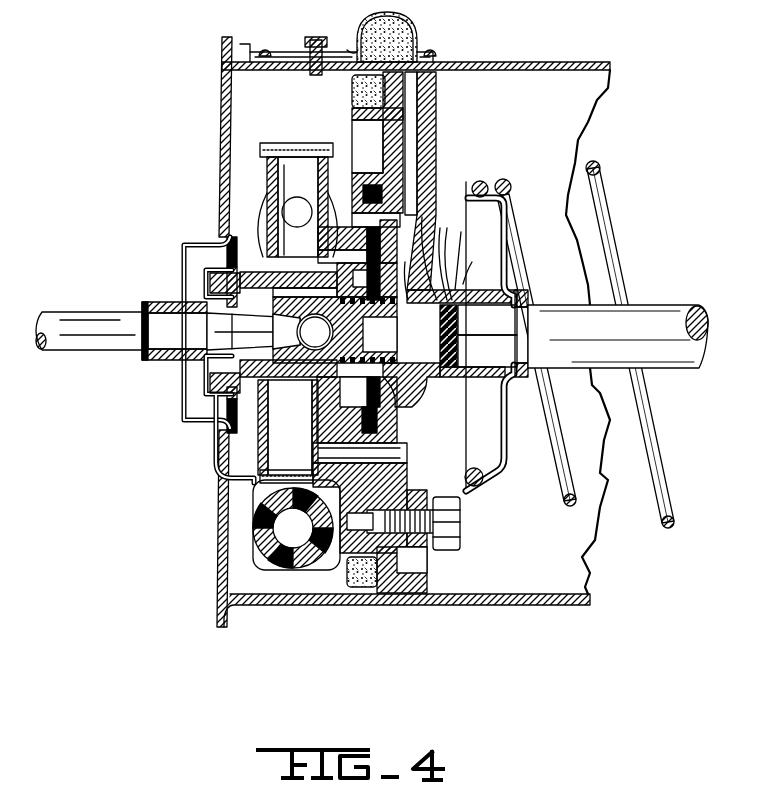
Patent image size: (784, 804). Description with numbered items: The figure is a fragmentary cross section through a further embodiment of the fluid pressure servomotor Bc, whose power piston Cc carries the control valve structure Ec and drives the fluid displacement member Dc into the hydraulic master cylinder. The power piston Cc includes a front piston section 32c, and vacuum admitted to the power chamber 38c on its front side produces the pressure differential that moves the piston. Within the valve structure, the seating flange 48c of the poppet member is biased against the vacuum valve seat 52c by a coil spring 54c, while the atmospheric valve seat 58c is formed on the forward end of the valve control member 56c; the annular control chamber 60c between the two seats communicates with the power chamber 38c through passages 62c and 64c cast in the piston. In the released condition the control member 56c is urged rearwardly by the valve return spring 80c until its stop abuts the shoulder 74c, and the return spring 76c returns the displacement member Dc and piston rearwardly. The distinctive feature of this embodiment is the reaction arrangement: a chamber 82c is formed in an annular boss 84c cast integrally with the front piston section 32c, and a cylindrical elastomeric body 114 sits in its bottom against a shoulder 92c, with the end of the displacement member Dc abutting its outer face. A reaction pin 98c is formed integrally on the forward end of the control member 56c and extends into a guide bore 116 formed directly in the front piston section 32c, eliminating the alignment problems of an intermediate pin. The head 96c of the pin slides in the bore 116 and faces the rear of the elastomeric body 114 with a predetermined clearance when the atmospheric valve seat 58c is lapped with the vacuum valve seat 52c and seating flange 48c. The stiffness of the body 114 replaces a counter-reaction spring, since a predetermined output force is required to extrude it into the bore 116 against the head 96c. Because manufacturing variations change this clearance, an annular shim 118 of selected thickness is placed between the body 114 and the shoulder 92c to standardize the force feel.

The fluid pressure servomotor Bc is at (567, 63).
The power piston Cc is at (439, 96).
The fluid displacement member Dc is at (656, 300).
The control valve structure Ec is at (182, 261).
The front piston section 32c is at (438, 104).
The power chamber 38c is at (501, 141).
The seating flange 48c is at (313, 445).
The vacuum valve seat 52c is at (298, 200).
The coil spring 54c is at (357, 237).
The valve control member 56c is at (312, 381).
The atmospheric valve seat 58c is at (283, 288).
The control chamber 60c is at (243, 428).
The passage 62c is at (287, 452).
The passage 64c is at (292, 483).
The shoulder 74c is at (203, 358).
The return spring 76c is at (601, 166).
The valve return spring 80c is at (410, 400).
The chamber 82c is at (514, 290).
The annular boss 84c is at (461, 232).
The shoulder 92c is at (458, 343).
The head 96c is at (444, 228).
The reaction pin 98c is at (421, 217).
The elastomeric body 114 is at (463, 284).
The guide bore 116 is at (458, 319).
The shim 118 is at (442, 381).